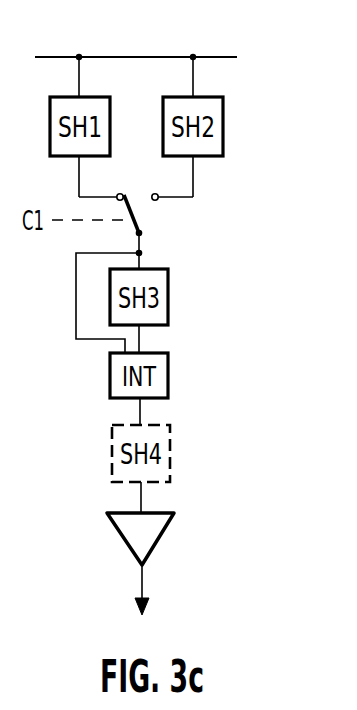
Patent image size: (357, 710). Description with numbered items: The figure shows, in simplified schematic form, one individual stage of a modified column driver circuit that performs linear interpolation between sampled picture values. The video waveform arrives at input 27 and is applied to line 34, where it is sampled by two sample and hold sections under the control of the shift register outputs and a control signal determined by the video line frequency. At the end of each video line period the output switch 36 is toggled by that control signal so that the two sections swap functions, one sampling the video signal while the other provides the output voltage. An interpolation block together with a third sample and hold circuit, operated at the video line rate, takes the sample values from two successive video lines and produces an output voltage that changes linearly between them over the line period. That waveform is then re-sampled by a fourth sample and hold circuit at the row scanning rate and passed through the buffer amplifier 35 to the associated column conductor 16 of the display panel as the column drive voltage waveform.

The input signal line 27 is at (44, 58).
The line 34 is at (137, 53).
The output switch 36 is at (145, 218).
The buffer amplifier 35 is at (173, 515).
The column conductor 16 is at (144, 604).